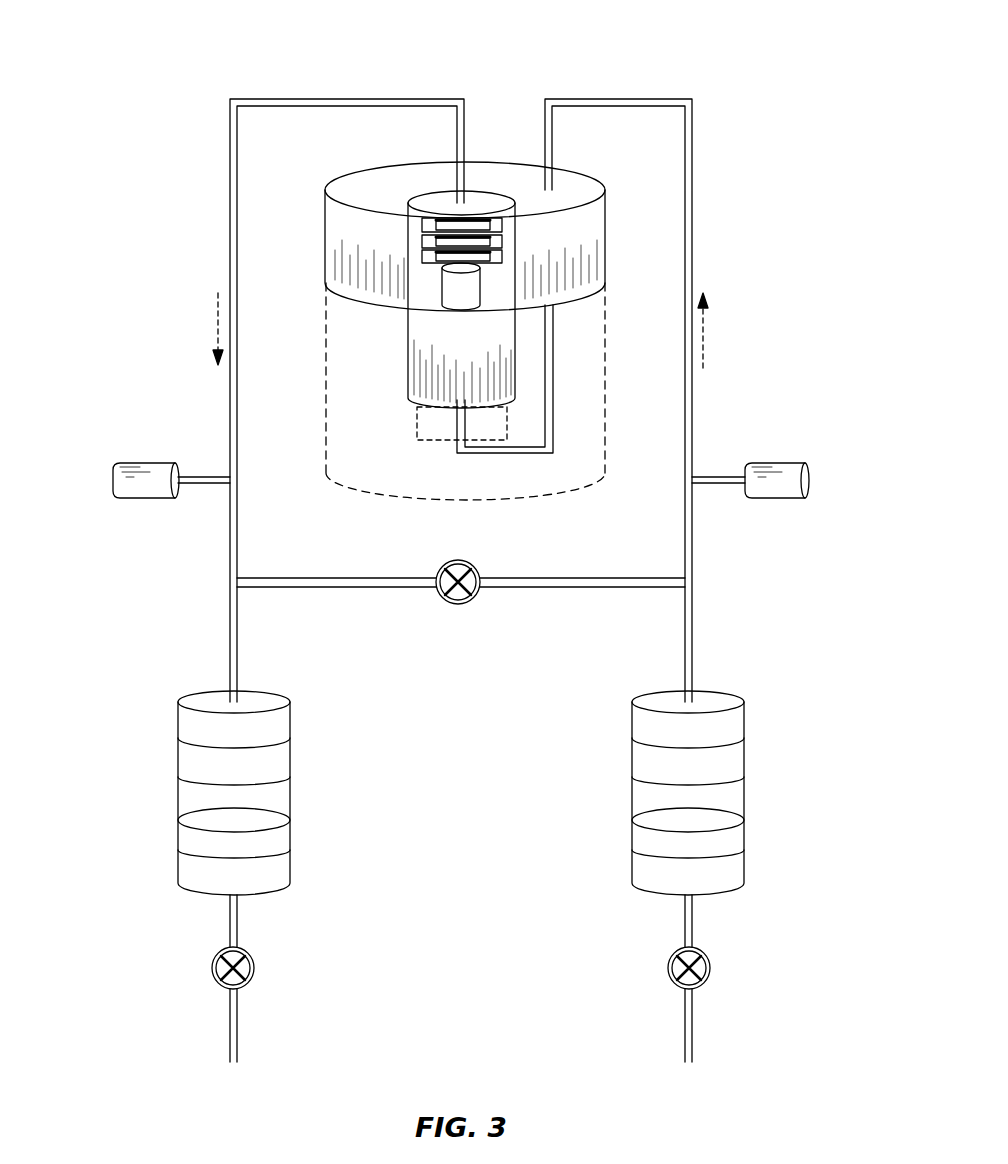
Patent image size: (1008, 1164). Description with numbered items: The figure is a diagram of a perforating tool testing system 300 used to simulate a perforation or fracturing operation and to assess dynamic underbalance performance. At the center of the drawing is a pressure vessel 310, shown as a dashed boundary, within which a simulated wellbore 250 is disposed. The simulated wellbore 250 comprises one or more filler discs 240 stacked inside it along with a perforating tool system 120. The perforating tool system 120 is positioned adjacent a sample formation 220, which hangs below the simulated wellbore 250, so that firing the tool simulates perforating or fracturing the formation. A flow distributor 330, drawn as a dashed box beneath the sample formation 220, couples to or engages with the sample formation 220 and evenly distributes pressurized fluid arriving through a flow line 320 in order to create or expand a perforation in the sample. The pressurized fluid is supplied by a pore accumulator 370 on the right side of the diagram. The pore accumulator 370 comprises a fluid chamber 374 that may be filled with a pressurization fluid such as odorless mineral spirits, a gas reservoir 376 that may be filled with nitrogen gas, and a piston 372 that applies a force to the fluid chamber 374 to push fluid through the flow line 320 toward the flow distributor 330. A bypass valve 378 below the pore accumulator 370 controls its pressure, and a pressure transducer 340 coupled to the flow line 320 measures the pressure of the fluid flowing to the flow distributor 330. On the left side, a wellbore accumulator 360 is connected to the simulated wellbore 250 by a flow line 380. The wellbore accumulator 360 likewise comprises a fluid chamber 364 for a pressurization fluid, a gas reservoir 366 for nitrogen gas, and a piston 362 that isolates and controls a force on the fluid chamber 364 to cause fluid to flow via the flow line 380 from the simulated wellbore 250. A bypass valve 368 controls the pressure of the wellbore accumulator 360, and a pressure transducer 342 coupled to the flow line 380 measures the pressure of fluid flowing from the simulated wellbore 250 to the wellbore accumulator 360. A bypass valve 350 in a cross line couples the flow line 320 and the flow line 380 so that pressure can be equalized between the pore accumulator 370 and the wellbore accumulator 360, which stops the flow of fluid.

The perforating tool testing system 300 is at (170, 56).
The flow line 380 is at (437, 98).
The bypass valve 350 is at (458, 605).
The pressure transducer 342 is at (113, 482).
The pressure transducer 340 is at (810, 481).
The pressure vessel 310 is at (345, 485).
The simulated wellbore 250 is at (515, 262).
The sample formation 220 is at (408, 385).
The flow line 320 is at (545, 455).
The flow distributor 330 is at (448, 418).
The filler disc 240 is at (422, 240).
The perforating tool system 120 is at (442, 300).
The wellbore accumulator 360 is at (192, 722).
The fluid chamber 364 is at (192, 790).
The piston 362 is at (195, 843).
The gas reservoir 366 is at (210, 883).
The bypass valve 368 is at (212, 968).
The pore accumulator 370 is at (735, 722).
The fluid chamber 374 is at (735, 790).
The piston 372 is at (735, 843).
The gas reservoir 376 is at (710, 883).
The bypass valve 378 is at (712, 968).